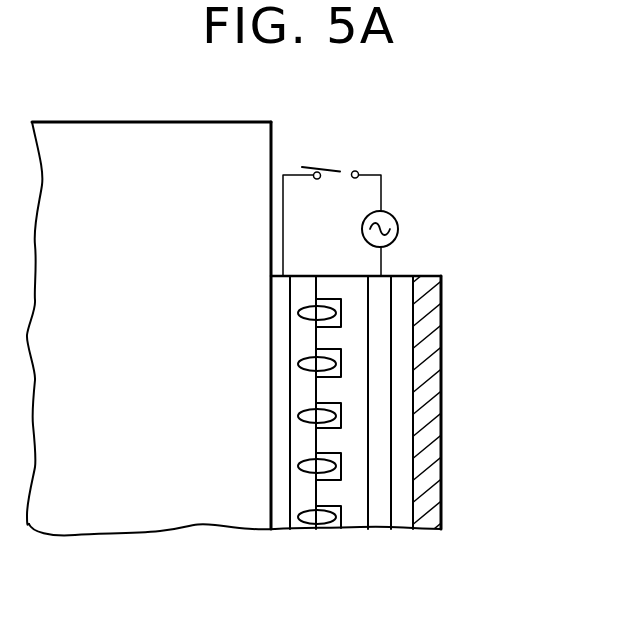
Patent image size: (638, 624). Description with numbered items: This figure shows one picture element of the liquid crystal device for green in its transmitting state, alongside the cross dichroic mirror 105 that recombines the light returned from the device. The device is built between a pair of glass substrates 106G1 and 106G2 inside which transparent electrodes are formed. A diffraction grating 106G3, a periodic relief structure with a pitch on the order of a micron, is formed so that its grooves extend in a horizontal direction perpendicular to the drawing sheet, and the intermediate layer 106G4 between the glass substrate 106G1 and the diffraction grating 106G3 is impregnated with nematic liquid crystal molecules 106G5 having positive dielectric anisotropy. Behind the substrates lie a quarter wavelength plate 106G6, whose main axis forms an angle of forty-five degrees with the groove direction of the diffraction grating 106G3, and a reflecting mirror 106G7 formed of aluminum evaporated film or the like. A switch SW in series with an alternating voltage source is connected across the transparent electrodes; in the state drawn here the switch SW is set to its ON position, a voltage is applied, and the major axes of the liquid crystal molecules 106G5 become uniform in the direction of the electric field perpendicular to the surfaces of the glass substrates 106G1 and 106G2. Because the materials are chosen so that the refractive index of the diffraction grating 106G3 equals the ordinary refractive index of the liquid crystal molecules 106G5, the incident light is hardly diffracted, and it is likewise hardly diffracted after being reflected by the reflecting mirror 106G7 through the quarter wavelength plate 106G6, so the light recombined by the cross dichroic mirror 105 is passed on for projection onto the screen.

The cross dichroic mirror 105 is at (123, 122).
The switch SW is at (339, 168).
The glass substrate 106G1 is at (277, 530).
The glass substrate 106G2 is at (385, 274).
The diffraction grating 106G3 is at (360, 532).
The intermediate layer 106G4 is at (333, 530).
The nematic liquid crystal molecules 106G5 is at (312, 524).
The quarter wavelength plate 106G6 is at (408, 275).
The reflecting mirror 106G7 is at (441, 398).